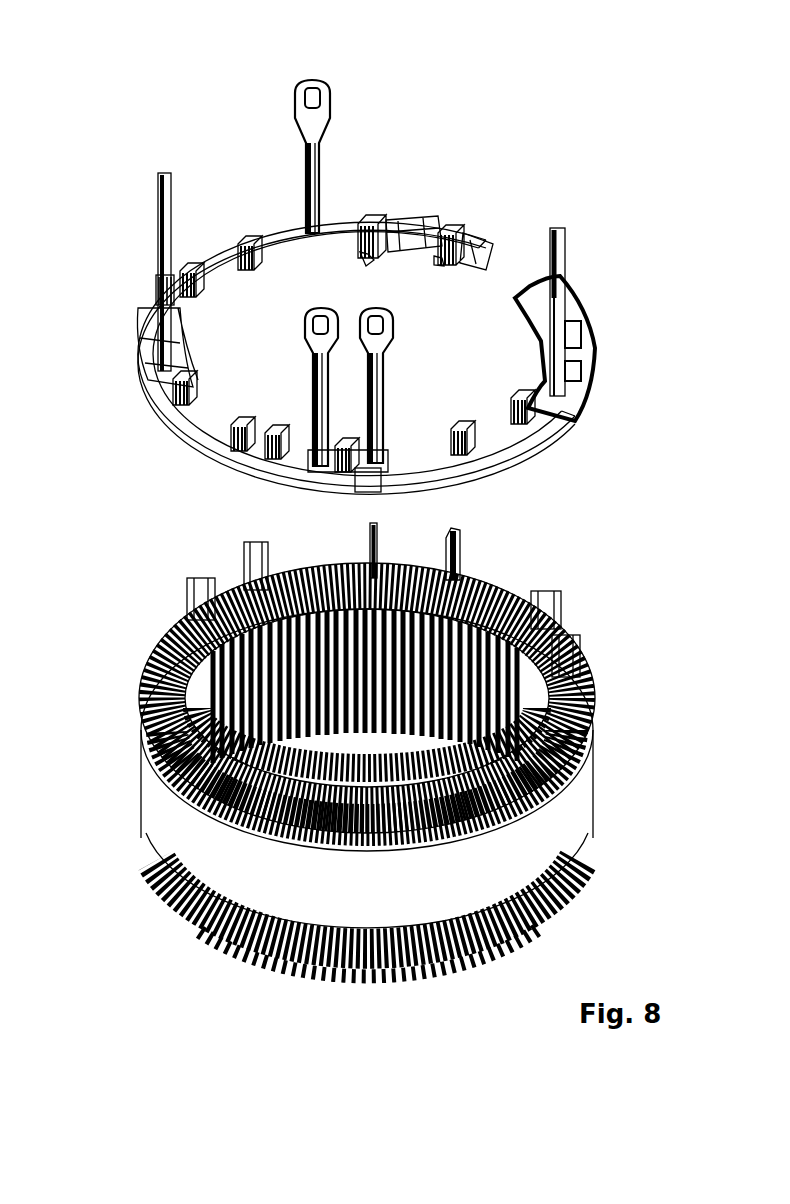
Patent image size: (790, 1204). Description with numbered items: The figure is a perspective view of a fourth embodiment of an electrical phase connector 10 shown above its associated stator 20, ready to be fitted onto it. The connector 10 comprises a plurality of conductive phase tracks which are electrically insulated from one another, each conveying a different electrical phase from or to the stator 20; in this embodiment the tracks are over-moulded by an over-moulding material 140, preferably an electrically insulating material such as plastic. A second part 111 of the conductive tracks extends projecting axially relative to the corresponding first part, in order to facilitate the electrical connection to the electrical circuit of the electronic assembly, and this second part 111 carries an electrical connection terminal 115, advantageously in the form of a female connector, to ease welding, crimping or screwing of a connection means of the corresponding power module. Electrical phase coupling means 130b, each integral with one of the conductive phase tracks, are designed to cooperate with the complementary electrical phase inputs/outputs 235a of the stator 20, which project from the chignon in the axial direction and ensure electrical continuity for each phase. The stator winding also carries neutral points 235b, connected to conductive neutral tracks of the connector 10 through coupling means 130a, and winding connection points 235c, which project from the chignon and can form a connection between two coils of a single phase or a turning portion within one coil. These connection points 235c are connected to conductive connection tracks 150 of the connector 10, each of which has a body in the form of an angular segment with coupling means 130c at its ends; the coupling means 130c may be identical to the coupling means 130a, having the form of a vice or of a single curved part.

The electrical phase connector 10 is at (408, 267).
The stator 20 is at (328, 736).
The second part of the conductive tracks 111 is at (292, 150).
The electrical connection terminal 115 is at (290, 82).
The coupling means of the conductive neutral tracks 130a is at (448, 211).
The electrical phase coupling means 130b is at (361, 198).
The coupling means 130c is at (360, 253).
The over-moulding material 140 is at (582, 343).
The conductive connection tracks 150 is at (399, 257).
The electrical phase inputs/outputs 235a is at (375, 522).
The neutral points 235b is at (452, 530).
The winding connection points 235c is at (366, 527).